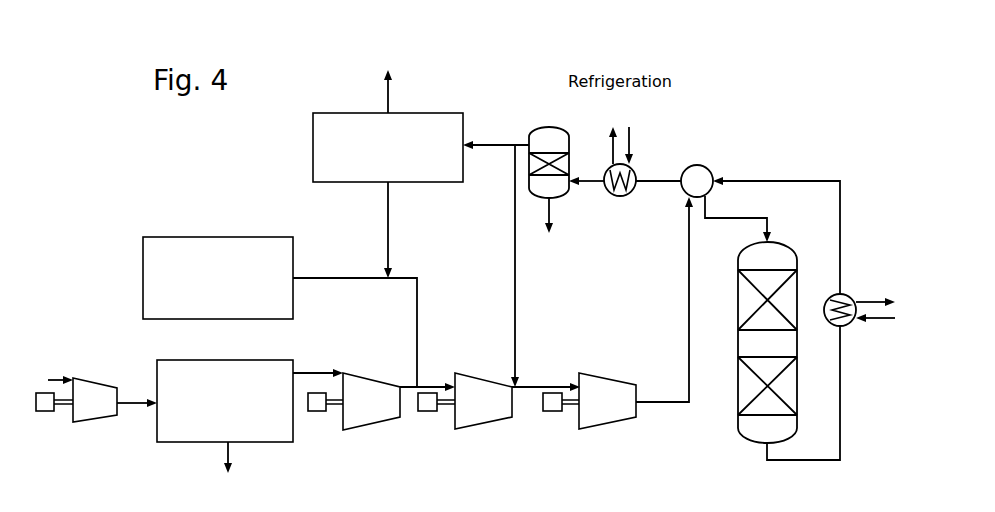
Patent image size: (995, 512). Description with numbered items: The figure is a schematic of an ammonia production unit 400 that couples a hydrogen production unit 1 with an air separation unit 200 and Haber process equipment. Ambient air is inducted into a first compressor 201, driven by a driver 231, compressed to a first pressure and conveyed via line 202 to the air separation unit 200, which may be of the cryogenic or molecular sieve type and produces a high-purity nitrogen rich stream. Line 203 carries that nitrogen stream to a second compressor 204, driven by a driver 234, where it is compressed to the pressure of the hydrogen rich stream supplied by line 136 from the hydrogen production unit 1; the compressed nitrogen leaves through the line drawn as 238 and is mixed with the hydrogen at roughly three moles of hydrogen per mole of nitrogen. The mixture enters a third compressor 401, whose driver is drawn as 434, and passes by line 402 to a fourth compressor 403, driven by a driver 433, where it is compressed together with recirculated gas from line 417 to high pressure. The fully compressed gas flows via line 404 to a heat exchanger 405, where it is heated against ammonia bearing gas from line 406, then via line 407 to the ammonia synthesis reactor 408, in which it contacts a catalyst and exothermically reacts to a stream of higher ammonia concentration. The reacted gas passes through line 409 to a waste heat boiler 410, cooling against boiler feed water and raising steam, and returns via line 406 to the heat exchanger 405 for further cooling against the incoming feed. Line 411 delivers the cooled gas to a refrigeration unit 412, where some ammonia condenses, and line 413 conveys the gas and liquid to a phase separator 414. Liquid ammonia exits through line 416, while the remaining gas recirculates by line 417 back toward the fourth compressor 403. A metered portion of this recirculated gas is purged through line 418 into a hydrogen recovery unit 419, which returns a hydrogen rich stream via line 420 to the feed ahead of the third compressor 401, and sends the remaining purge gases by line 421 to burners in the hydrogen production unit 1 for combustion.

The ammonia production unit 400 is at (852, 142).
The hydrogen production unit 1 is at (225, 237).
The line 136 is at (368, 278).
The air separation unit 200 is at (195, 442).
The first compressor 201 is at (97, 422).
The driver 231 is at (42, 411).
The line 202 is at (140, 406).
The line 203 is at (303, 373).
The second compressor 204 is at (232, 455).
The driver 234 is at (314, 411).
The compressed nitrogen stream 238 is at (422, 387).
The third compressor 401 is at (462, 429).
The motor of first syngas compressor 434 is at (428, 411).
The line 402 is at (553, 387).
The driver 433 is at (552, 411).
The fourth compressor 403 is at (595, 429).
The line 404 is at (665, 402).
The heat exchanger 405 is at (703, 165).
The line 407 is at (728, 218).
The ammonia synthesis reactor 408 is at (738, 428).
The line 409 is at (840, 437).
The line 406 is at (840, 202).
The waste heat boiler 410 is at (848, 295).
The line 411 is at (645, 181).
The refrigeration unit 412 is at (620, 196).
The line 413 is at (583, 181).
The phase separator 414 is at (555, 127).
The line 416 is at (552, 208).
The line 417 is at (523, 145).
The line 418 is at (483, 145).
The hydrogen recovery unit 419 is at (313, 146).
The line 420 is at (387, 197).
The line 421 is at (388, 93).